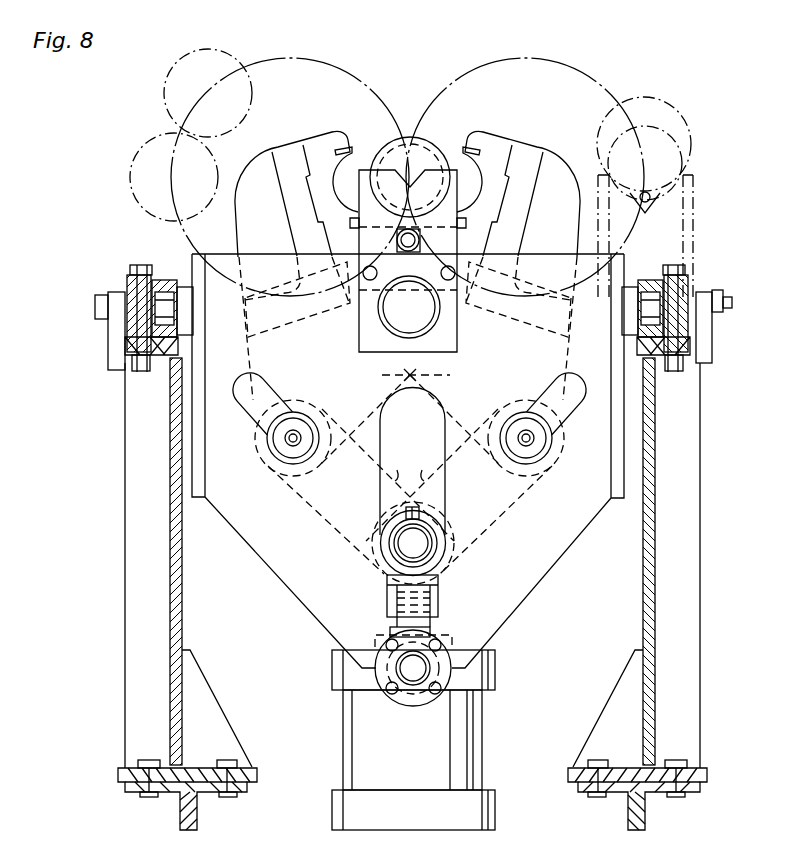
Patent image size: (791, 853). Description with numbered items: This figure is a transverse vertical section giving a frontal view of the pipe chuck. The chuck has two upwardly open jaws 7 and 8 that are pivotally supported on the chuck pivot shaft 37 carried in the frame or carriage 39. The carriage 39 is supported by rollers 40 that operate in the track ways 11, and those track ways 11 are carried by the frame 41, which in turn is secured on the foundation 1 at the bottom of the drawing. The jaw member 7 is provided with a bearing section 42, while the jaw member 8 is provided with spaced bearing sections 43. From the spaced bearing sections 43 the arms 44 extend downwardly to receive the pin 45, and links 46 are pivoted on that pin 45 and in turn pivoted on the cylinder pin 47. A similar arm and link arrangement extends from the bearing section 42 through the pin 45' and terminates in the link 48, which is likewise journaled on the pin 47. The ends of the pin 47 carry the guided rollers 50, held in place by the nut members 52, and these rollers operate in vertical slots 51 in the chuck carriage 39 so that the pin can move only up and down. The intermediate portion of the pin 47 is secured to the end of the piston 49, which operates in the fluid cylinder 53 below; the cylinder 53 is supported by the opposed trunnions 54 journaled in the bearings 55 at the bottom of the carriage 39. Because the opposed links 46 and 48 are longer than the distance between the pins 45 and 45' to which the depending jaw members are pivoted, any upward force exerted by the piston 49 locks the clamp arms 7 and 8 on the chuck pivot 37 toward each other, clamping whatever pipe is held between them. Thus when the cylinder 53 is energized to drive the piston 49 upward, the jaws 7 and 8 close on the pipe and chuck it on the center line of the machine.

The foundation 1 is at (185, 812).
The jaw 7 is at (287, 190).
The jaw 8 is at (523, 192).
The track ways 11 is at (163, 350).
The chuck pivot shaft 37 is at (398, 320).
The frame or carriage 39 is at (200, 474).
The rollers 40 is at (168, 283).
The frame 41 is at (172, 465).
The bearing section 42 is at (537, 328).
The spaced bearing sections 43 is at (285, 327).
The arms 44 is at (443, 388).
The pin 45 is at (274, 424).
The pin 45' is at (551, 424).
The links 46 is at (395, 463).
The cylinder pin 47 is at (420, 550).
The link 48 is at (426, 463).
The piston 49 is at (392, 608).
The guided rollers 50 is at (385, 560).
The vertical slots 51 is at (442, 437).
The nut members 52 is at (430, 533).
The fluid cylinder 53 is at (422, 750).
The trunnions 54 is at (415, 675).
The bearings 55 is at (408, 692).